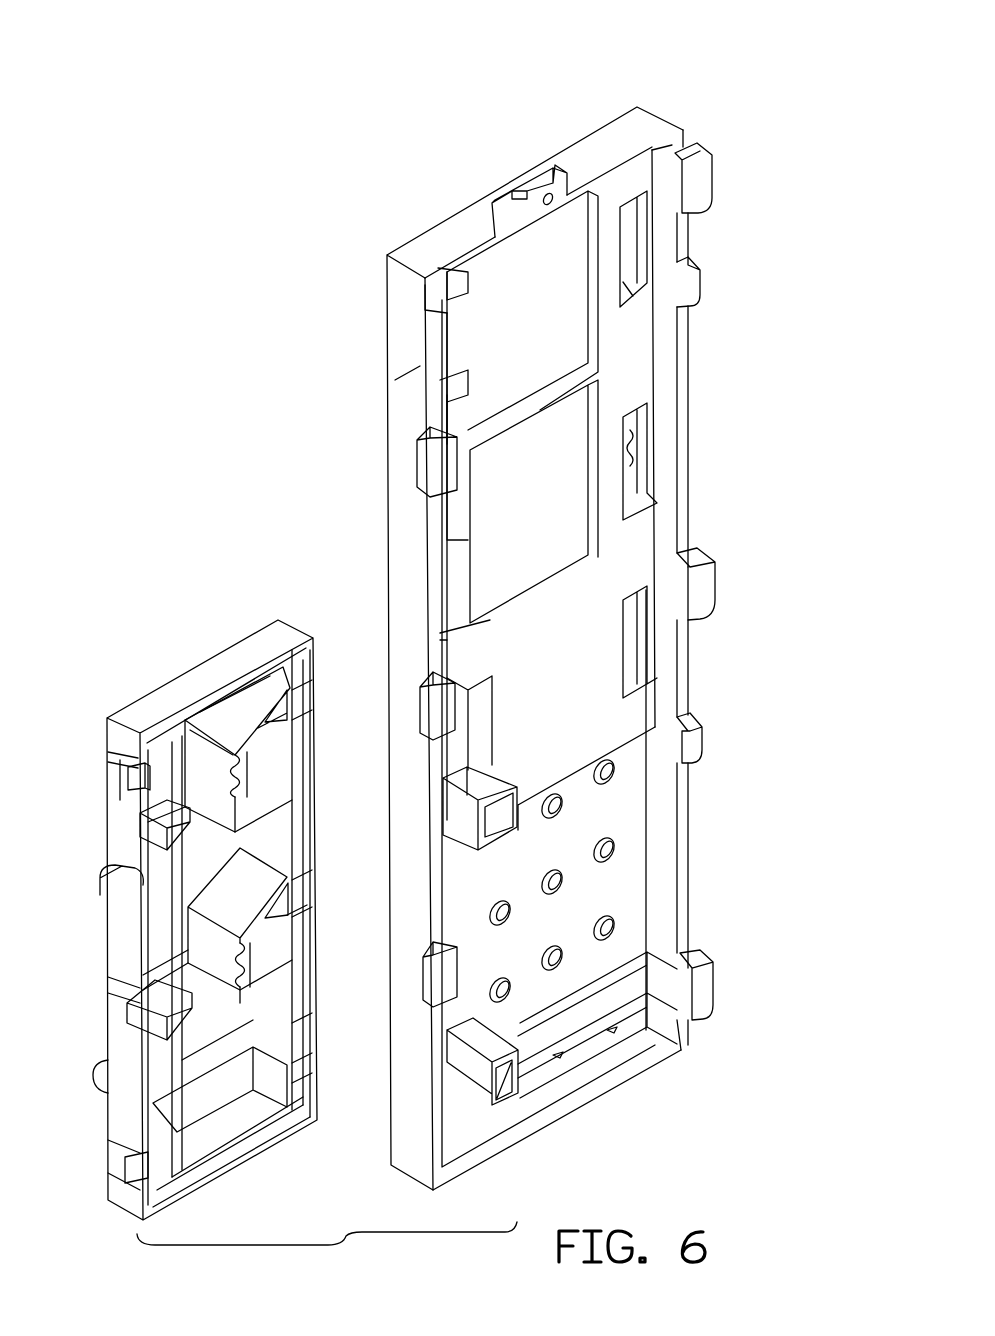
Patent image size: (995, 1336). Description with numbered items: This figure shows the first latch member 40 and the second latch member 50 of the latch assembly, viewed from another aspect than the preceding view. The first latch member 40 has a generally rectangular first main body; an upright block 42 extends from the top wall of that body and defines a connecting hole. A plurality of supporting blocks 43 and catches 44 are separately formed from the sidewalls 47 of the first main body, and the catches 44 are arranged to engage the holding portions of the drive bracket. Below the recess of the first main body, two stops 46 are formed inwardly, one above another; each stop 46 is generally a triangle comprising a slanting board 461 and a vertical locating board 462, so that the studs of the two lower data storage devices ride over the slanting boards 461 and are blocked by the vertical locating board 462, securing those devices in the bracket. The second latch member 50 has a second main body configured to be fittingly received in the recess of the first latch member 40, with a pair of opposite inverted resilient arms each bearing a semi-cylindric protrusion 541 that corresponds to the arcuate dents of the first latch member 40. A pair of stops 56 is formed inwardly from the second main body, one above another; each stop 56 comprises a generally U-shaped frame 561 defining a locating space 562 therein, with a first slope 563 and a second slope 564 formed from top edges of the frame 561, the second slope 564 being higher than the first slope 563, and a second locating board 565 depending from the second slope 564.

The first latch member 40 is at (620, 97).
The upright block 42 is at (560, 185).
The supporting blocks 43 is at (700, 738).
The catches 44 is at (707, 590).
The stops 46 is at (490, 1090).
The slanting board 461 is at (478, 1056).
The vertical locating board 462 is at (523, 1080).
The sidewalls 47 is at (407, 378).
The second latch member 50 is at (246, 626).
The semi-cylindric protrusion 541 is at (110, 880).
The stops 56 is at (250, 955).
The U-shaped frame 561 is at (233, 782).
The locating space 562 is at (152, 787).
The first slope 563 is at (158, 828).
The second slope 564 is at (245, 712).
The second locating board 565 is at (252, 706).